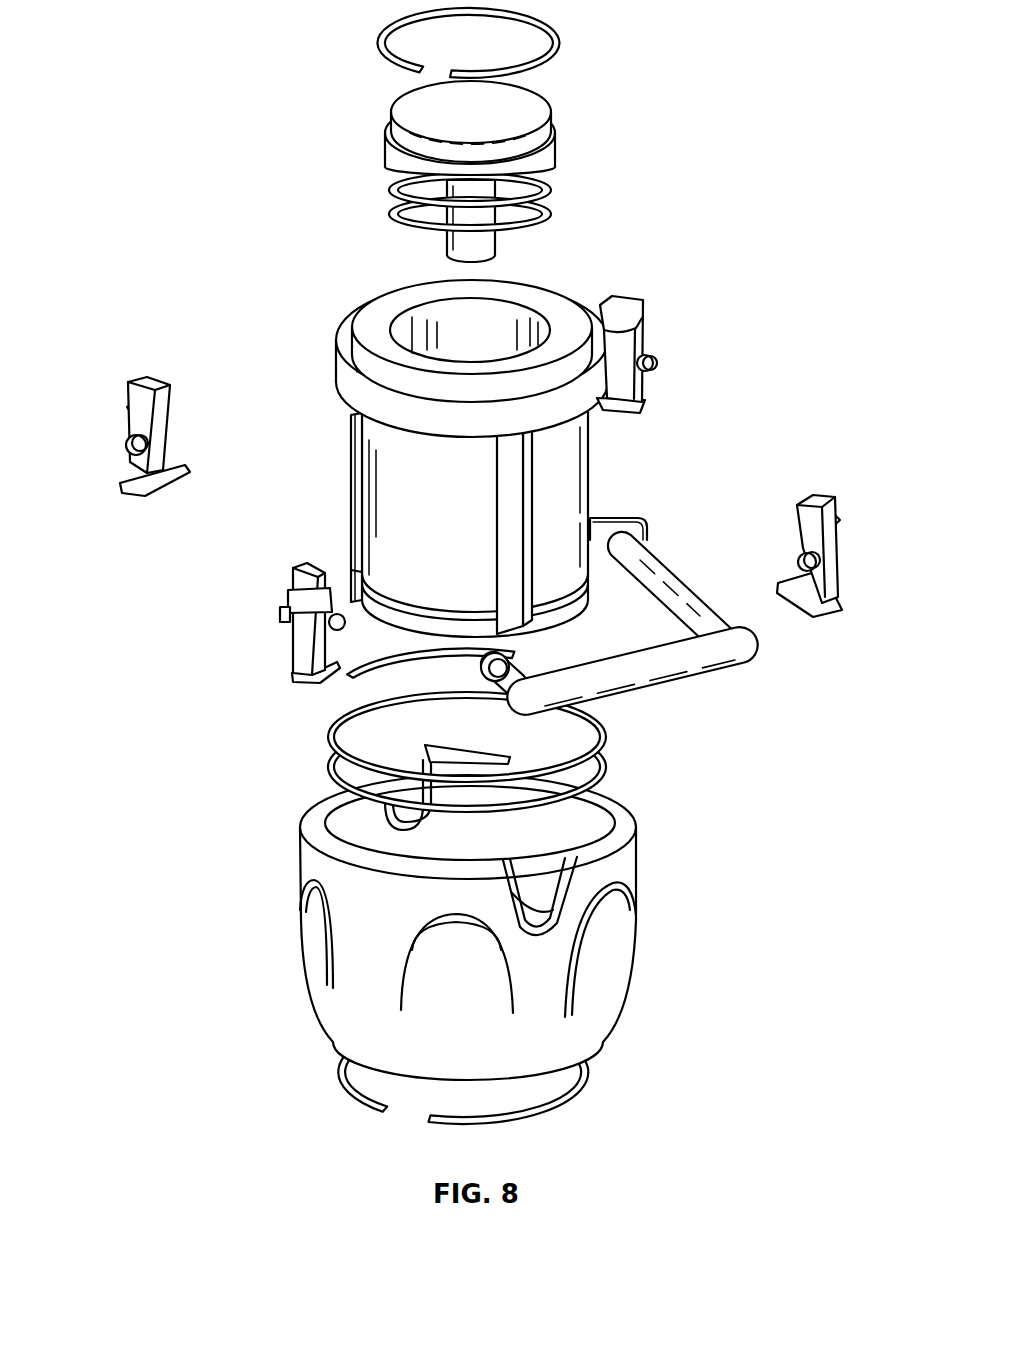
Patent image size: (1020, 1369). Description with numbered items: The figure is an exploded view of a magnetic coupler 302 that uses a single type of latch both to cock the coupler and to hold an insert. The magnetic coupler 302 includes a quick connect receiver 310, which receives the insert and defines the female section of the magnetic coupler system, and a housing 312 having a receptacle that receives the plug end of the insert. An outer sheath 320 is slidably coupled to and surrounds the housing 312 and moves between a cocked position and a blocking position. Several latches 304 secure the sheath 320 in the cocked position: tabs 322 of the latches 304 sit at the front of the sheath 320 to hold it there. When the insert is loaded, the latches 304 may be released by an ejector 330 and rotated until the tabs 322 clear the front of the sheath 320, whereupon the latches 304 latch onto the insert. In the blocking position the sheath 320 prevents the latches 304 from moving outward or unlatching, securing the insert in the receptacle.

The magnetic coupler 302 is at (671, 140).
The ejector 330 is at (394, 138).
The quick connect receiver 310 is at (361, 304).
The housing 312 is at (590, 474).
The latch 304 is at (152, 380).
The tab 322 is at (126, 480).
The outer sheath 320 is at (644, 858).